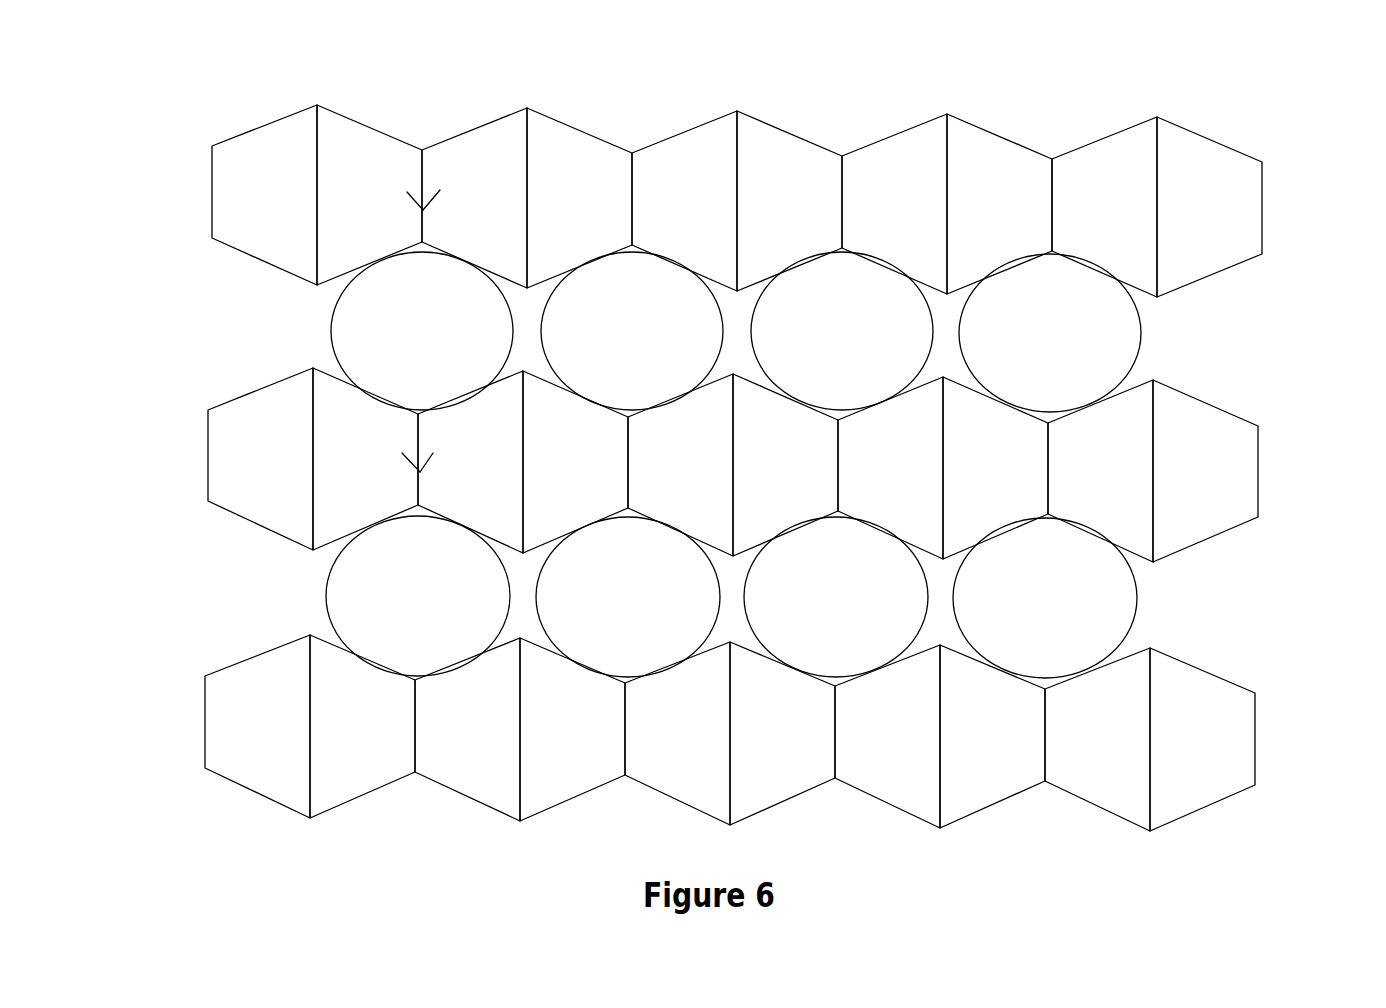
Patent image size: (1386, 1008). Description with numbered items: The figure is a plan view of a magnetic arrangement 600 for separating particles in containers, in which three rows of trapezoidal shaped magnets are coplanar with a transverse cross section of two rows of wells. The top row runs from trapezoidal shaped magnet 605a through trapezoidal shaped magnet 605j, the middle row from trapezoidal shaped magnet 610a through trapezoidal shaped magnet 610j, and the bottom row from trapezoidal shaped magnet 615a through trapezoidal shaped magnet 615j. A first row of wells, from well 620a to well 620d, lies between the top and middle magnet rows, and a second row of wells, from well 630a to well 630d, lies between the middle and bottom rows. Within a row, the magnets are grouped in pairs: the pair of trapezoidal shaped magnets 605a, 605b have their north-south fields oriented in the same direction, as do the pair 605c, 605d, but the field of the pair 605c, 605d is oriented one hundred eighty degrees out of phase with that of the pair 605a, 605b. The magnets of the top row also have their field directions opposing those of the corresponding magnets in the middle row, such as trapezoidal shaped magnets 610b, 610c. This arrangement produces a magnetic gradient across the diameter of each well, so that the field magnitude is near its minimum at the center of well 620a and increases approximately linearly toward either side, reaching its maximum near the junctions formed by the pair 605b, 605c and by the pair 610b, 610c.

The magnetic arrangement 600 is at (718, 453).
The trapezoidal shaped magnet 605a is at (232, 138).
The trapezoidal shaped magnet 605b is at (398, 147).
The trapezoidal shaped magnet 605c is at (512, 122).
The trapezoidal shaped magnet 605d is at (598, 143).
The trapezoidal shaped magnet 605j is at (1192, 137).
The trapezoidal shaped magnet 610a is at (225, 460).
The trapezoidal shaped magnet 610b is at (348, 517).
The trapezoidal shaped magnet 610c is at (488, 518).
The trapezoidal shaped magnet 610j is at (1227, 475).
The trapezoidal shaped magnet 615a is at (222, 727).
The trapezoidal shaped magnet 615j is at (1223, 733).
The well 620a is at (330, 330).
The well 620d is at (1142, 335).
The well 630a is at (325, 592).
The well 630d is at (1140, 603).